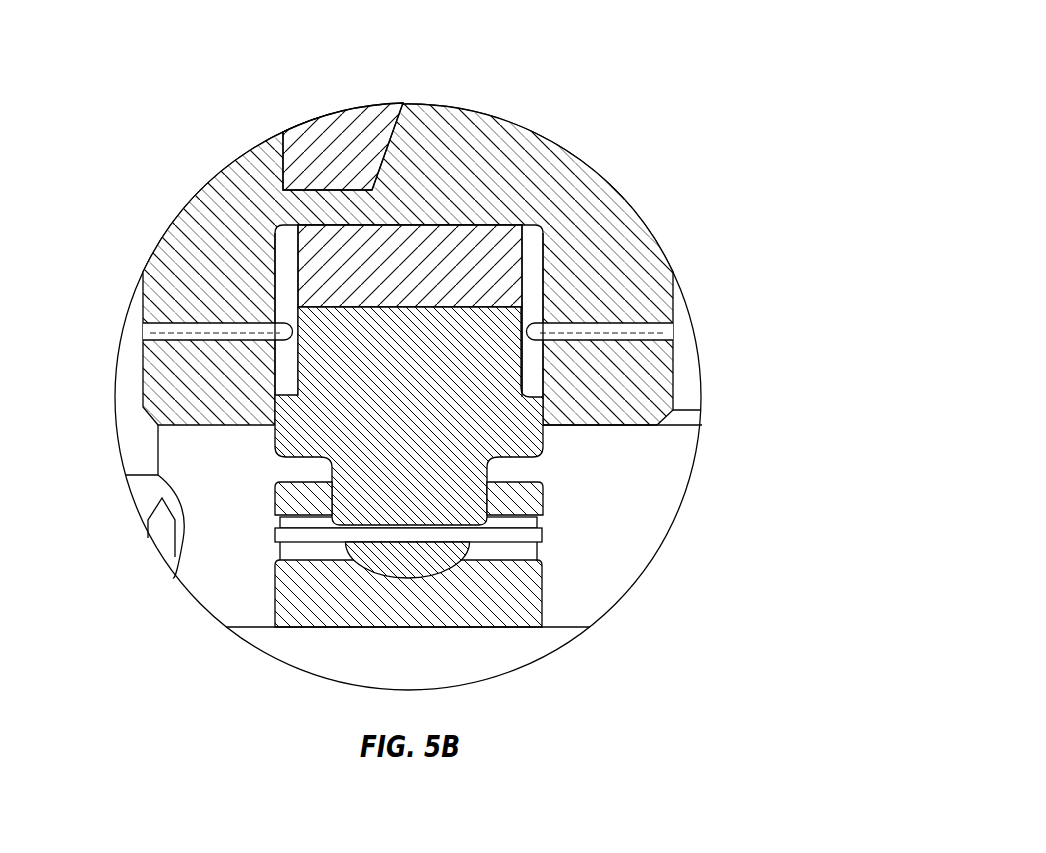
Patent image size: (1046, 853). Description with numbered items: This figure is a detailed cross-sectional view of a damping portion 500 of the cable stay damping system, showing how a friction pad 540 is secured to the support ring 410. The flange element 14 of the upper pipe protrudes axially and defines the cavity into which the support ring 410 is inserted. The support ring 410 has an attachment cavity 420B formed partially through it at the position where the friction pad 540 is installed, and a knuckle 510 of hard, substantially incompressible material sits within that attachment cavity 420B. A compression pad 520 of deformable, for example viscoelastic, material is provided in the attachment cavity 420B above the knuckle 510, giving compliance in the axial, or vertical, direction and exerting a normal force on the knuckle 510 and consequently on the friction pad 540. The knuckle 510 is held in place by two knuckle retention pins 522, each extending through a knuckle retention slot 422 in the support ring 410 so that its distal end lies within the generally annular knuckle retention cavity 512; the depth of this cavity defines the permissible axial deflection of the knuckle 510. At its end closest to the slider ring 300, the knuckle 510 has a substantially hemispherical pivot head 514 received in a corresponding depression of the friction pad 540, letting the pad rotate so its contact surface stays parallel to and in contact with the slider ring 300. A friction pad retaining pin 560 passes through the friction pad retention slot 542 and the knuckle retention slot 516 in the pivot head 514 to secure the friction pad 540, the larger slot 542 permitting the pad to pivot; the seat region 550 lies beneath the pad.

The valve assembly 500 is at (198, 80).
The flange element 14 is at (318, 133).
The support ring 410 is at (458, 145).
The attachment cavity 420B is at (538, 233).
The knuckle retention slot 422 is at (680, 328).
The compression pad 520 is at (302, 275).
The knuckle retention pin 522 is at (143, 333).
The knuckle 510 is at (390, 432).
The knuckle retention cavity 512 is at (532, 370).
The pivot head 514 is at (450, 508).
The knuckle retention slot 516 is at (378, 552).
The friction pad retention slot 542 is at (556, 550).
The friction pad retaining pin 560 is at (275, 540).
The friction pad 540 is at (275, 580).
The seat 550 is at (377, 637).
The slider ring 300 is at (505, 650).